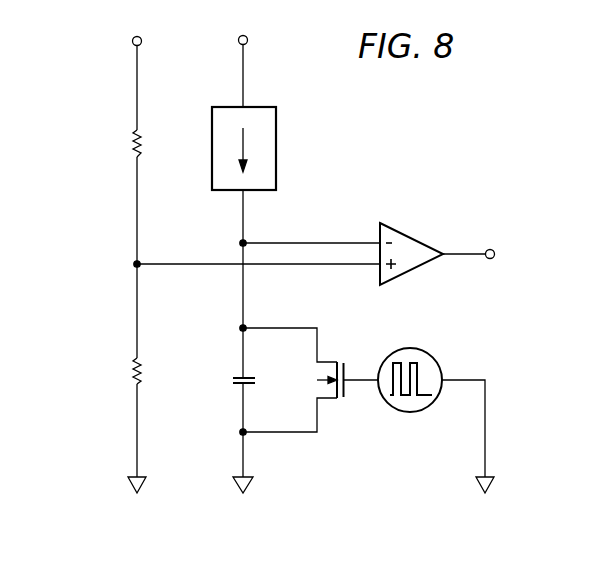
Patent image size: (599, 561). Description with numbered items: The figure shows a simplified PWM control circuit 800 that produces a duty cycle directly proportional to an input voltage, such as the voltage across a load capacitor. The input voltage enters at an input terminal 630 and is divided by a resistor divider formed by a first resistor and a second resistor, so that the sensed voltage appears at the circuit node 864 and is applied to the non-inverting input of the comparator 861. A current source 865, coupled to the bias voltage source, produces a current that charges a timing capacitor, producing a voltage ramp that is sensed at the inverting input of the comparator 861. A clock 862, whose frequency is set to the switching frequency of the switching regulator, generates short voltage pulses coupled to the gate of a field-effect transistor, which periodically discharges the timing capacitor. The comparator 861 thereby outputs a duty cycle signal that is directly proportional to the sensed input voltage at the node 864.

The PWM control circuit 800 is at (92, 337).
The voltage input terminal V_L 630 is at (133, 41).
The circuit node 864 is at (140, 257).
The current source 865 is at (276, 146).
The comparator 861 is at (428, 214).
The clock 862 is at (410, 412).